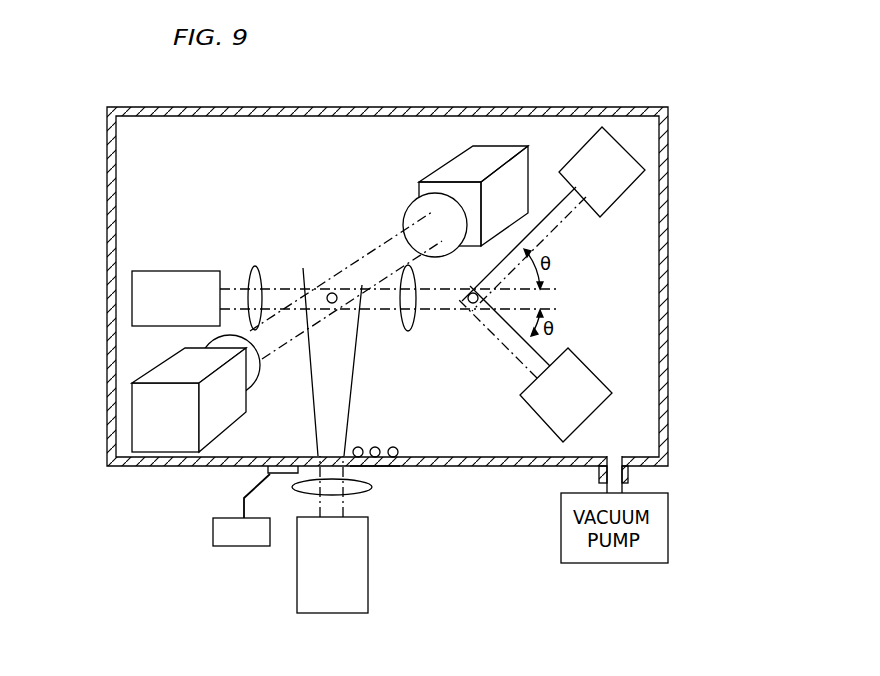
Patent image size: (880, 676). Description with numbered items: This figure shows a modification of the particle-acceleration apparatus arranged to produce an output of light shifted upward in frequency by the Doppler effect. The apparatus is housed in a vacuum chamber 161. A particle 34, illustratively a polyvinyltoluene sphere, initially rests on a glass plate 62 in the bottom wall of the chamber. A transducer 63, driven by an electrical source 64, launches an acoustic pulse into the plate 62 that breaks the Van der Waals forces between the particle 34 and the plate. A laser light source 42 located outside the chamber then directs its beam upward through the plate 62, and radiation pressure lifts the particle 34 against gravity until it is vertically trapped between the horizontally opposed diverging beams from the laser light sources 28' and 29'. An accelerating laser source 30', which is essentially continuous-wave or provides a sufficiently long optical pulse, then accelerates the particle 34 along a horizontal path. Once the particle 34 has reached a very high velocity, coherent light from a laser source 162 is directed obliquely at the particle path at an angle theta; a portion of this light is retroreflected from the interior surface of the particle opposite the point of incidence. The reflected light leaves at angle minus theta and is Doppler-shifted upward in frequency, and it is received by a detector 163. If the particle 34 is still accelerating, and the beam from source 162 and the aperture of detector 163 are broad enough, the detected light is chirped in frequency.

The laser light source 29' is at (500, 138).
The accelerating laser source 30' is at (248, 252).
The laser light source 28' is at (141, 401).
The particle 34 is at (335, 303).
The detector 163 is at (616, 197).
The laser source 162 is at (537, 411).
The vacuum chamber 161 is at (505, 470).
The glass plate 62 is at (387, 468).
The transducer 63 is at (267, 472).
The electrical source 64 is at (228, 537).
The laser light source 42 is at (333, 613).